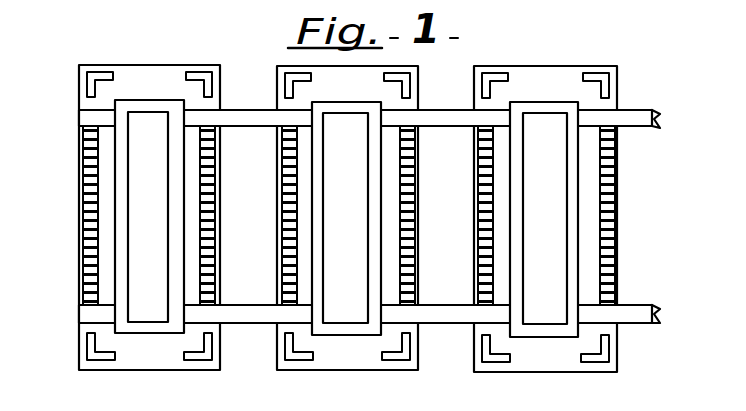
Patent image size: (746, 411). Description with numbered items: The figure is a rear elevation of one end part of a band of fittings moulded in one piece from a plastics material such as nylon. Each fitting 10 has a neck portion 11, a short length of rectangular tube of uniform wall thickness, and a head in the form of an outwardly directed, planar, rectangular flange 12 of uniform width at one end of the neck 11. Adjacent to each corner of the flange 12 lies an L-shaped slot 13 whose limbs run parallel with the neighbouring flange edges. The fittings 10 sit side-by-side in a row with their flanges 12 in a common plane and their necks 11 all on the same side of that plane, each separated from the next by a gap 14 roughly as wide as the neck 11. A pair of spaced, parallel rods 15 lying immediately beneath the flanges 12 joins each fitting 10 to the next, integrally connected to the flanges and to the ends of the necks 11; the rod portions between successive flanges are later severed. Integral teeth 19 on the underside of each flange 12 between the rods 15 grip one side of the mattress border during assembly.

The fitting 10 is at (349, 209).
The neck portion 11 is at (128, 229).
The flange 12 is at (157, 360).
The L-shaped slot 13 is at (92, 67).
The gap 14 is at (350, 222).
The rods 15 is at (247, 118).
The teeth 19 is at (85, 204).